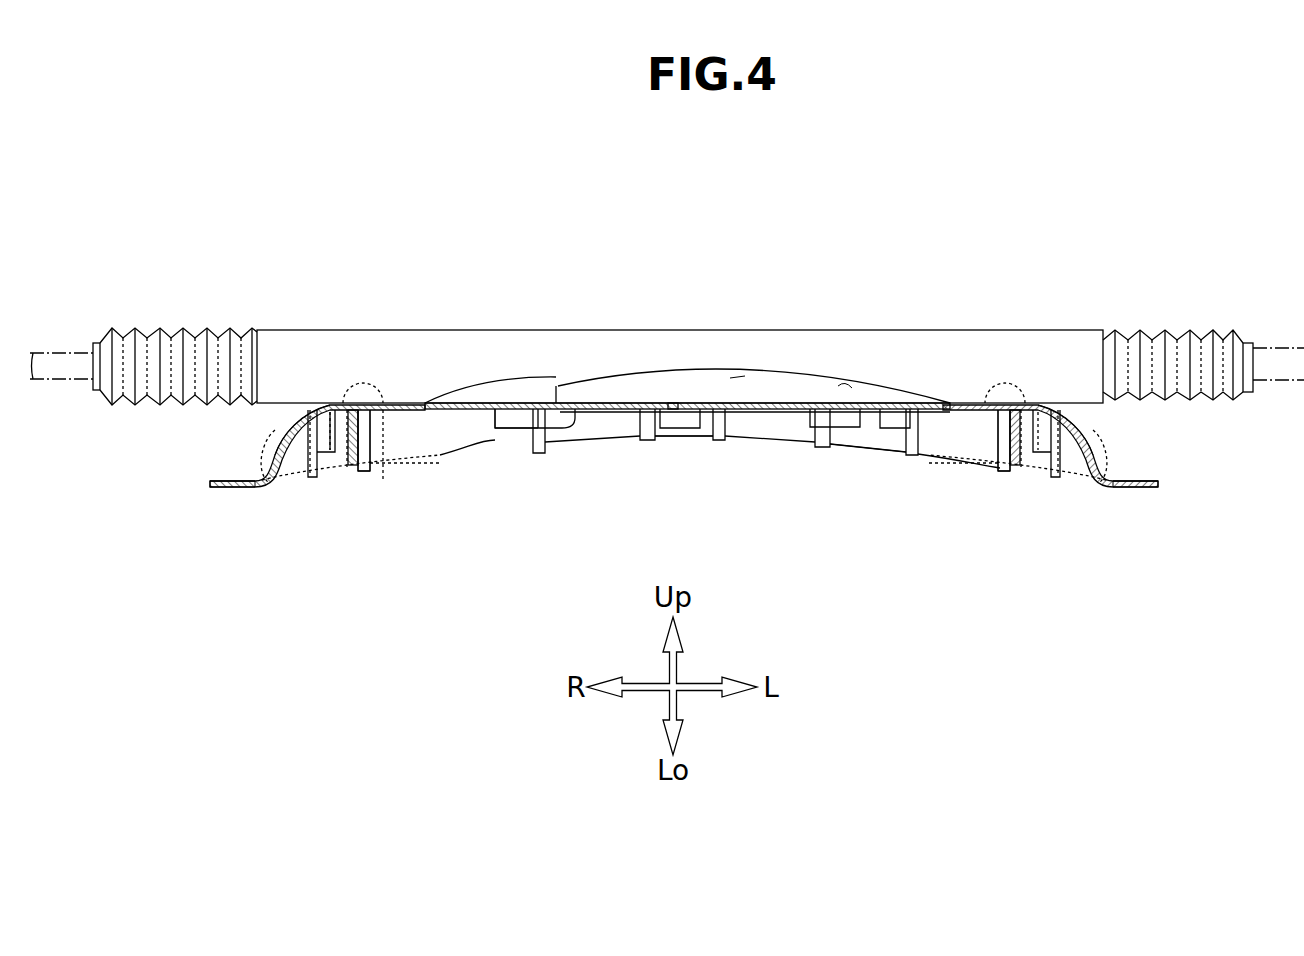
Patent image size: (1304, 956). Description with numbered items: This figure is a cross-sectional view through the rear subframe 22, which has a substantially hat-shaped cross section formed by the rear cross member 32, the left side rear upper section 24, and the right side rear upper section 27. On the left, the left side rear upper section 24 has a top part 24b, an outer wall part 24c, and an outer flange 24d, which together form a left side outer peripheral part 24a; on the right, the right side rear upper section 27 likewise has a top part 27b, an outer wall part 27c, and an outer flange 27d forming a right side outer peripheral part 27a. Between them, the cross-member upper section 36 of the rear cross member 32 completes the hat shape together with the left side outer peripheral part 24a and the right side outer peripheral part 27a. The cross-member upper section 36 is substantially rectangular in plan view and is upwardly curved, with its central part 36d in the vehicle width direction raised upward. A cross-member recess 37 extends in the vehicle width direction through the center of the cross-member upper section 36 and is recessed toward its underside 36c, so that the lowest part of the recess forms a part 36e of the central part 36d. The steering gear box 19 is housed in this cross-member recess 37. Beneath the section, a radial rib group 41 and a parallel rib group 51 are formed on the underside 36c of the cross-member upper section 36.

The steering gear box 19 is at (483, 330).
The rear subframe 22 is at (1215, 205).
The left side rear upper section 24 is at (1076, 404).
The left side outer peripheral part 24a is at (1180, 595).
The top part 24b is at (985, 412).
The outer wall part 24c is at (1095, 488).
The outer flange 24d is at (1140, 490).
The right side rear upper section 27 is at (295, 404).
The right side outer peripheral part 27a is at (403, 595).
The top part 27b is at (383, 482).
The outer wall part 27c is at (272, 490).
The outer flange 27d is at (232, 490).
The rear cross member 32 is at (557, 400).
The cross-member upper section 36 is at (796, 378).
The underside 36c is at (695, 426).
The central part 36d is at (740, 377).
The part of the central part 36e is at (672, 400).
The cross-member recess 37 is at (840, 387).
The radial rib group 41 is at (516, 440).
The parallel rib group 51 is at (869, 450).